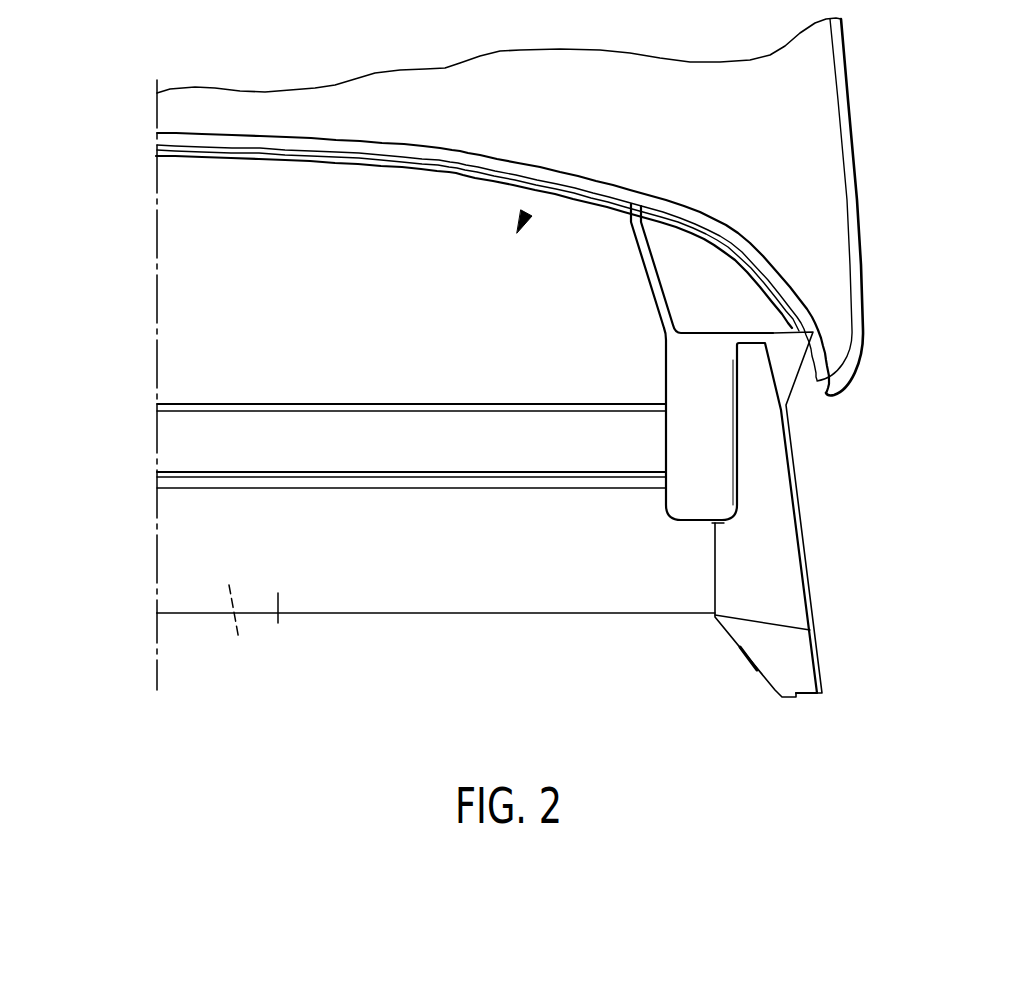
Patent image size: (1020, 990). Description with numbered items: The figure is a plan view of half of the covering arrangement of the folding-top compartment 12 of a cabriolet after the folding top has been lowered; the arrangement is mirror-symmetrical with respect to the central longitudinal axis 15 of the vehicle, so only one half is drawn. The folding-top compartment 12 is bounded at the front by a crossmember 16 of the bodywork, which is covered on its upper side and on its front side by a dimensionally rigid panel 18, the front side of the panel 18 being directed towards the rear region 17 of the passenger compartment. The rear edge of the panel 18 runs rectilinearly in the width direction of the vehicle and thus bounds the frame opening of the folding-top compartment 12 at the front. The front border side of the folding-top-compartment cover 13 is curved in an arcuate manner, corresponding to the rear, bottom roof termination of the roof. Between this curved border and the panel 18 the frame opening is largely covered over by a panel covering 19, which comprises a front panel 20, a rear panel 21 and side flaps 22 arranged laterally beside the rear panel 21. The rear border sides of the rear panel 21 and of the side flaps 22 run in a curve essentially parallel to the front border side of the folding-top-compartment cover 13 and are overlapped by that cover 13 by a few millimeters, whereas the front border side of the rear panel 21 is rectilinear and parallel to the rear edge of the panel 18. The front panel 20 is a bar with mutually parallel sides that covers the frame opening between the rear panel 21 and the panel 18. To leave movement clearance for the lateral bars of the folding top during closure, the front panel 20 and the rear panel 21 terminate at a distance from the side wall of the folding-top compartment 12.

The folding-top compartment 12 is at (718, 448).
The folding-top-compartment cover 13 is at (826, 118).
The central longitudinal axis 15 is at (154, 613).
The crossmember 16 is at (253, 634).
The rear region of the passenger compartment 17 is at (464, 682).
The panel 18 is at (460, 564).
The panel covering 19 is at (523, 222).
The front panel 20 is at (468, 455).
The rear panel 21 is at (462, 320).
The side flaps 22 is at (708, 253).